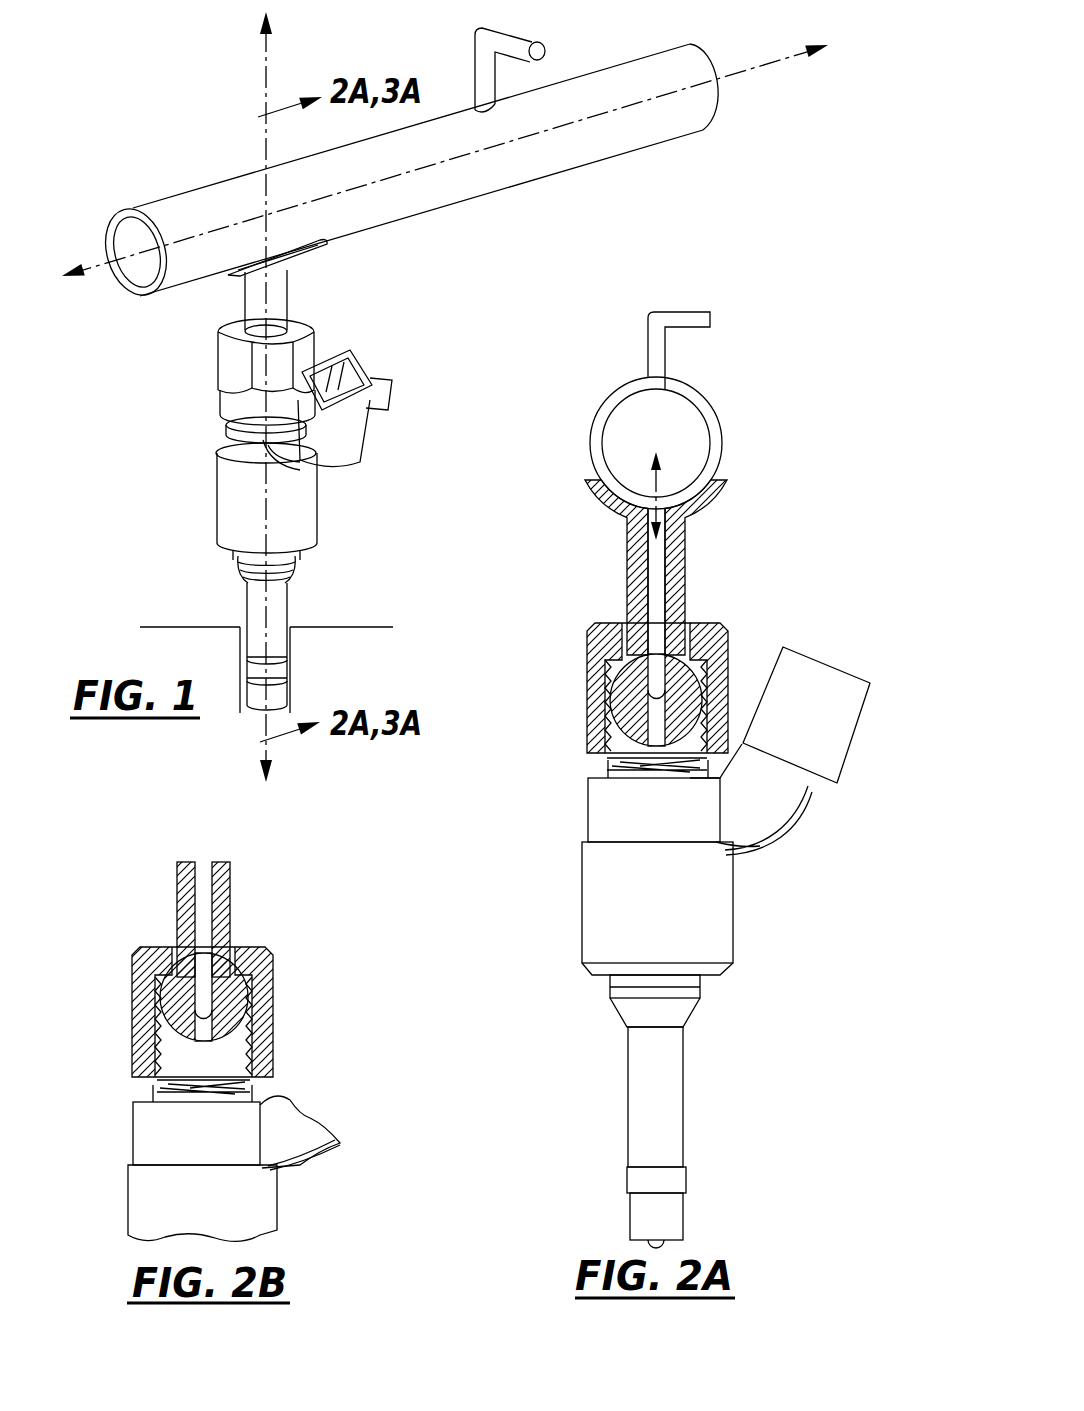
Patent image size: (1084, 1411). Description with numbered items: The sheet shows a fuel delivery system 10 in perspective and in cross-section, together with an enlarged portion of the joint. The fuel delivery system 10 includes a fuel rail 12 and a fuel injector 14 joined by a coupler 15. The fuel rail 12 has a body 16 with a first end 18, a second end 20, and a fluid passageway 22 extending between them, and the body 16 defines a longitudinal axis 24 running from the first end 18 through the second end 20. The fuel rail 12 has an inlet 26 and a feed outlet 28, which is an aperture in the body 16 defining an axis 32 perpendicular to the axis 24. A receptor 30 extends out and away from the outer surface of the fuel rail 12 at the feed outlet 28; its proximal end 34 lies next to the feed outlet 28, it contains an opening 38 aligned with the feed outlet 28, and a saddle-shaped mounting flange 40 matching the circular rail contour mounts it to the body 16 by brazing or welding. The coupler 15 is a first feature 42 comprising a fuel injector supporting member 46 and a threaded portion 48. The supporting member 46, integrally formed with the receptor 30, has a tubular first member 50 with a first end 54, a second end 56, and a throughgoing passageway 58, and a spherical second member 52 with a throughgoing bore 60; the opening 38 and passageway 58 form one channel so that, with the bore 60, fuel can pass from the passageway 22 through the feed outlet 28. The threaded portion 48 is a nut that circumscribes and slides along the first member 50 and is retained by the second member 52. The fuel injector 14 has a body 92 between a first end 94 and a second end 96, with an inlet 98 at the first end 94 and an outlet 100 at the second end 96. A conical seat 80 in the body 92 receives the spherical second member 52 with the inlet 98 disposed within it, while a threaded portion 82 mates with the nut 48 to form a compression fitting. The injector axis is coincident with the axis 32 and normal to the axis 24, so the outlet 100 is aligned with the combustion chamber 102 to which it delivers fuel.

In FIG. 1, the fuel delivery system 10 is at (150, 152).
In FIG. 2A, the fuel delivery system 10 is at (568, 425).
In FIG. 1, the fuel rail 12 is at (401, 151).
In FIG. 2A, the fuel rail 12 is at (702, 408).
In FIG. 1, the fuel injector 14 is at (237, 576).
In FIG. 2A, the fuel injector 14 is at (676, 1004).
In FIG. 2B, the fuel injector 14 is at (215, 1150).
In FIG. 1, the coupler 15 is at (203, 295).
In FIG. 2A, the coupler 15 is at (600, 604).
In FIG. 1, the body 16 is at (472, 173).
In FIG. 1, the first end 18 is at (95, 247).
In FIG. 1, the second end 20 is at (649, 36).
In FIG. 1, the fluid passageway 22 is at (138, 263).
In FIG. 2A, the fluid passageway 22 is at (670, 442).
In FIG. 1, the longitudinal axis 24 is at (770, 57).
In FIG. 1, the inlet 26 is at (510, 70).
In FIG. 2A, the inlet 26 is at (688, 313).
In FIG. 2A, the feed outlet 28 is at (660, 493).
In FIG. 1, the receptor 30 is at (287, 293).
In FIG. 2A, the receptor 30 is at (668, 553).
In FIG. 1, the axis 32 is at (263, 53).
In FIG. 2A, the axis 32 is at (655, 480).
In FIG. 2A, the proximal end 34 is at (565, 501).
In FIG. 2A, the opening 38 is at (672, 490).
In FIG. 1, the mounting flange 40 is at (320, 243).
In FIG. 2A, the mounting flange 40 is at (687, 490).
In FIG. 2B, the first feature 42 is at (199, 970).
In FIG. 2A, the fuel injector supporting member 46 is at (702, 533).
In FIG. 2A, the threaded portion 48 is at (608, 703).
In FIG. 2B, the threaded portion 48 is at (162, 1025).
In FIG. 2A, the first member 50 is at (655, 581).
In FIG. 2B, the first member 50 is at (266, 911).
In FIG. 2A, the second member 52 is at (600, 708).
In FIG. 2B, the second member 52 is at (183, 1019).
In FIG. 2A, the first end 54 is at (588, 524).
In FIG. 2A, the second end 56 is at (678, 688).
In FIG. 2B, the second end 56 is at (178, 984).
In FIG. 2A, the throughgoing passageway 58 is at (645, 592).
In FIG. 2B, the throughgoing passageway 58 is at (207, 882).
In FIG. 2A, the throughgoing bore 60 is at (660, 672).
In FIG. 2B, the throughgoing bore 60 is at (122, 988).
In FIG. 2A, the seat 80 is at (612, 752).
In FIG. 2B, the seat 80 is at (210, 1025).
In FIG. 1, the threaded portion 82 is at (220, 417).
In FIG. 2A, the threaded portion 82 is at (765, 743).
In FIG. 2A, the body 92 is at (732, 882).
In FIG. 2A, the first end 94 is at (664, 708).
In FIG. 2A, the second end 96 is at (666, 1111).
In FIG. 2A, the inlet 98 is at (660, 700).
In FIG. 2B, the inlet 98 is at (217, 1033).
In FIG. 1, the outlet 100 is at (278, 695).
In FIG. 2A, the outlet 100 is at (630, 1230).
In FIG. 1, the combustion chamber 102 is at (235, 610).